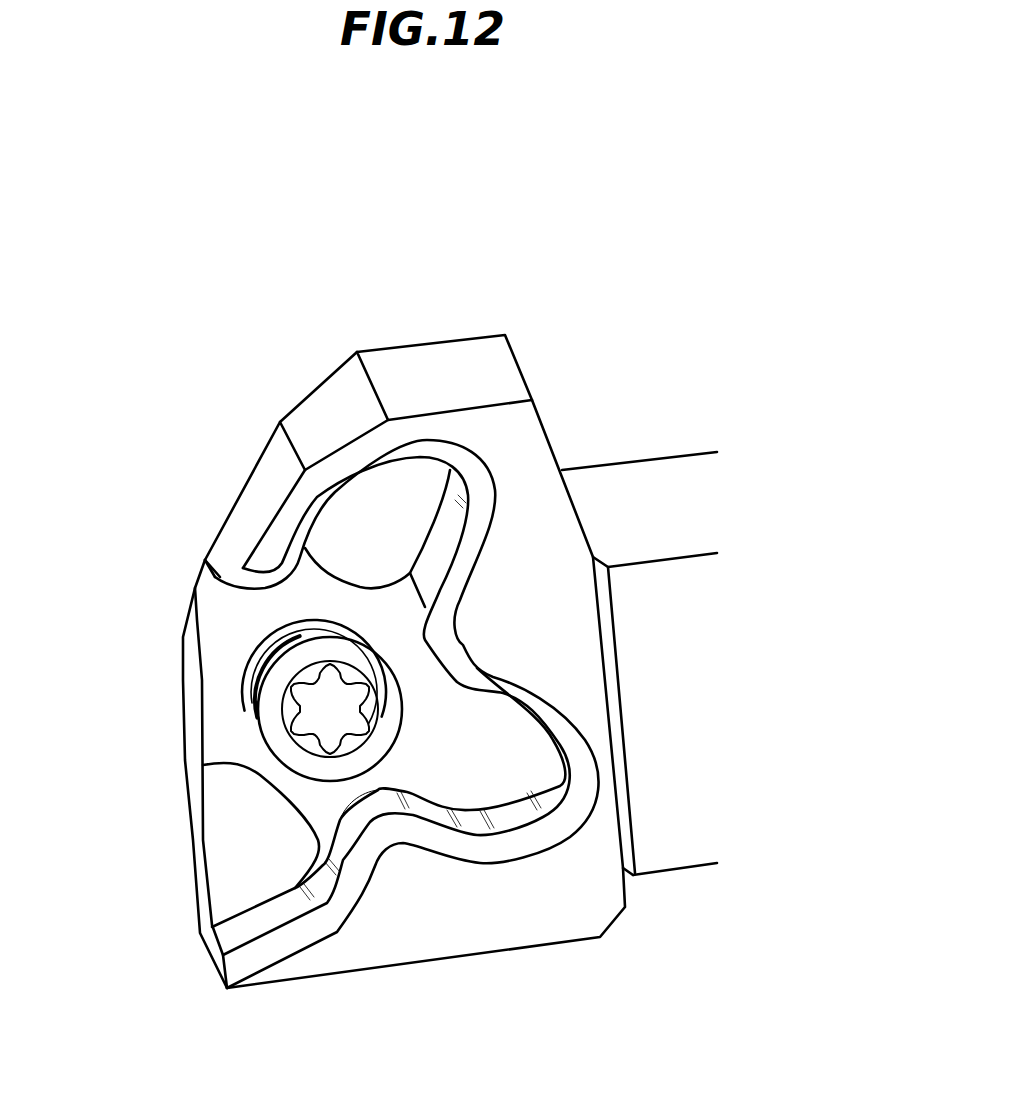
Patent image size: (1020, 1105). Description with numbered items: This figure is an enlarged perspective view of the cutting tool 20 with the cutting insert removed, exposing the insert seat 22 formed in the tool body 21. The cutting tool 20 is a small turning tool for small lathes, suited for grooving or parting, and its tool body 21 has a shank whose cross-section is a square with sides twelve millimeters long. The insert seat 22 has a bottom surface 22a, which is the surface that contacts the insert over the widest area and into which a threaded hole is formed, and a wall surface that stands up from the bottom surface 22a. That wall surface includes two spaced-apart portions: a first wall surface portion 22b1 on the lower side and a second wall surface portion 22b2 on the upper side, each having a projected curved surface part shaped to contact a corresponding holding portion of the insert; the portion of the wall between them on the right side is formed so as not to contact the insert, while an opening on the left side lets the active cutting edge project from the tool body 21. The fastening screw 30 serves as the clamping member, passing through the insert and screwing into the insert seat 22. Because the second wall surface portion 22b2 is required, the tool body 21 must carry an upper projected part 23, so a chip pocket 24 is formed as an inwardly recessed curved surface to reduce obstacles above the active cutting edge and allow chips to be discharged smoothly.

The cutting tool 20 is at (582, 455).
The tool body 21 is at (518, 447).
The insert seat 22 is at (300, 790).
The bottom surface 22a is at (245, 733).
The first wall surface portion 22b1 is at (340, 850).
The second wall surface portion 22b2 is at (310, 560).
The upper projected part 23 is at (478, 367).
The chip pocket 24 is at (253, 493).
The fastening screw 30 is at (272, 687).